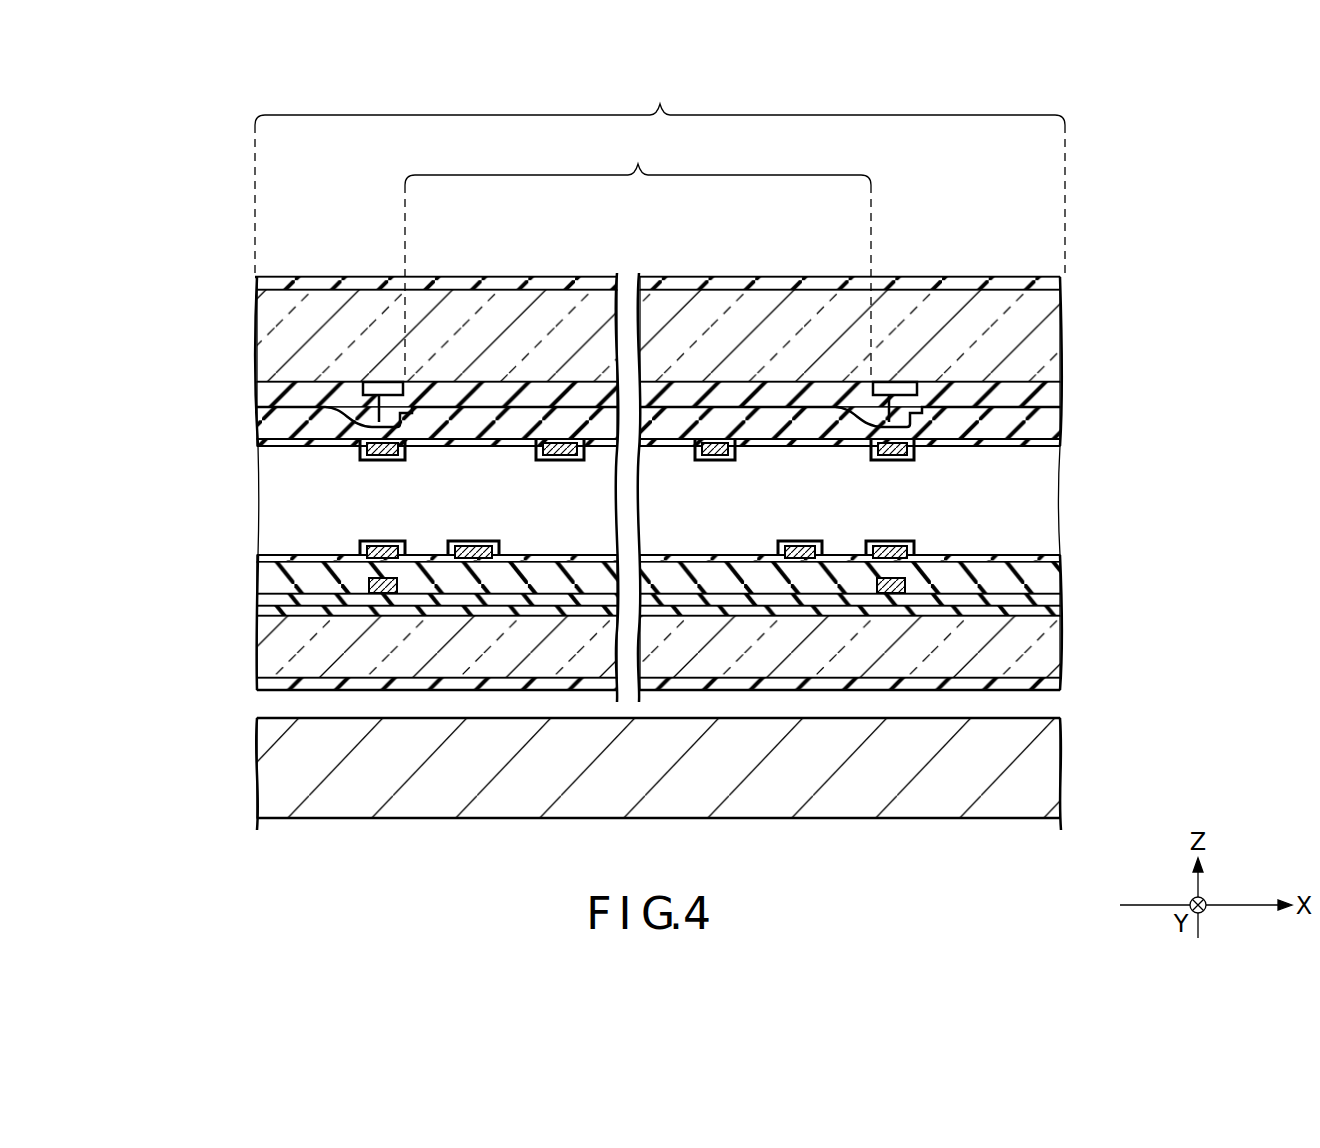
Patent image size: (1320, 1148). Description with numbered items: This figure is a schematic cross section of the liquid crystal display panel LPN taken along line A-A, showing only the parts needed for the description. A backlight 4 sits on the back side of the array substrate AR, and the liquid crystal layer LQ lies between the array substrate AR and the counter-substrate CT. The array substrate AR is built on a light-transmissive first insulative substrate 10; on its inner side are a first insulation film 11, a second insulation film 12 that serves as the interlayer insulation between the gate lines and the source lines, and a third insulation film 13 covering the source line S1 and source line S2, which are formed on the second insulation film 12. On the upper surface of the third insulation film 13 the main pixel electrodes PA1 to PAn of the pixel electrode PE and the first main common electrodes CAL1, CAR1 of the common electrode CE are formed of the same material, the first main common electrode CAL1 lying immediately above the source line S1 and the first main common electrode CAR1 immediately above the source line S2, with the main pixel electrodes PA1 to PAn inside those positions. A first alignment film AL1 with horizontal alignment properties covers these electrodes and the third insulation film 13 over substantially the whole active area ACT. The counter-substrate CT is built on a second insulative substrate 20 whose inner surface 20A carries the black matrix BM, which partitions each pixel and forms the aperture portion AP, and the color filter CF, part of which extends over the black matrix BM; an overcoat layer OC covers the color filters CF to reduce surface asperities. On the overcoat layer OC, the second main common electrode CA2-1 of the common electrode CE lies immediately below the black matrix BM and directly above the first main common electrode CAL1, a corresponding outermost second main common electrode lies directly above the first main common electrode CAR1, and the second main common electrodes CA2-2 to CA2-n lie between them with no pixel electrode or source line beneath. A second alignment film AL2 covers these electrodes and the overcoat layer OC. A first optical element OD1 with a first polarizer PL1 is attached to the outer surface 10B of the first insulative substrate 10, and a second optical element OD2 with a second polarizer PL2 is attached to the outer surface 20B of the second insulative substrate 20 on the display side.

The active area ACT is at (660, 175).
The aperture portion AP is at (638, 260).
The outer surface of second insulative substrate 20B is at (290, 277).
The color filter CF is at (305, 392).
The black matrix BM is at (375, 388).
The second optical element OD2 is at (580, 292).
The second polarizer PL2 is at (262, 285).
The liquid crystal display panel LPN is at (627, 544).
The counter-substrate CT is at (620, 360).
The second insulative substrate 20 is at (1050, 340).
The inner surface of second insulative substrate 20A is at (282, 384).
The second alignment film AL2 is at (1048, 443).
The overcoat layer OC is at (1007, 425).
The common electrode CE is at (634, 499).
The second main common electrode CA2-1 is at (402, 448).
The second main common electrode CA2-2 is at (558, 460).
The second main common electrode CA2-n is at (717, 460).
The first main common electrode CAL1 is at (380, 546).
The first main common electrode CAR1 is at (890, 546).
The liquid crystal layer LQ is at (265, 520).
The array substrate AR is at (620, 695).
The first alignment film AL1 is at (1050, 558).
The third insulation film 13 is at (1045, 578).
The second insulation film 12 is at (1052, 597).
The first insulation film 11 is at (1062, 612).
The first insulative substrate 10 is at (263, 625).
The first optical element OD1 is at (581, 686).
The first polarizer PL1 is at (262, 684).
The outer surface of first insulative substrate 10B is at (282, 690).
The backlight 4 is at (265, 778).
The source line S1 is at (381, 594).
The source line S2 is at (890, 595).
The pixel electrode PE is at (646, 703).
The main pixel electrode PA1 is at (478, 560).
The main pixel electrode PAn is at (800, 562).
The line A- A is at (659, 849).